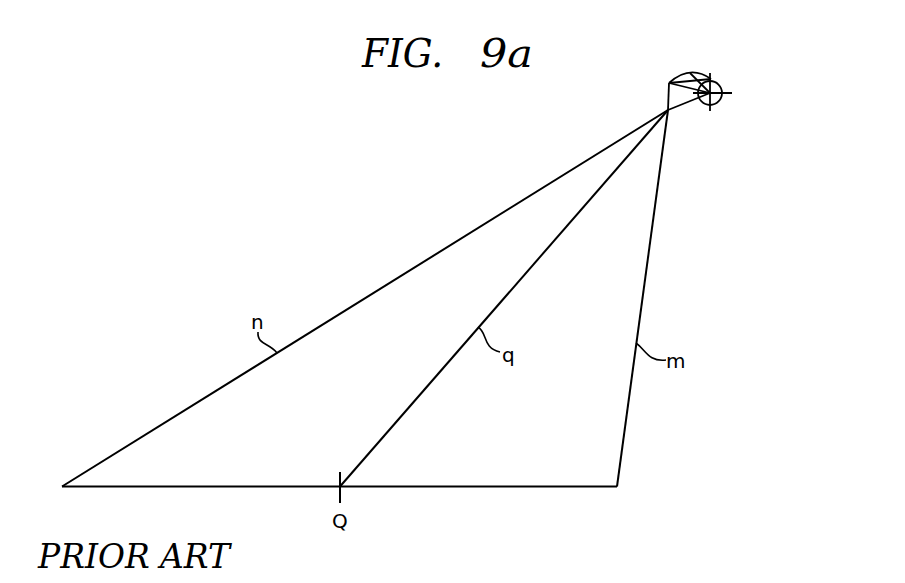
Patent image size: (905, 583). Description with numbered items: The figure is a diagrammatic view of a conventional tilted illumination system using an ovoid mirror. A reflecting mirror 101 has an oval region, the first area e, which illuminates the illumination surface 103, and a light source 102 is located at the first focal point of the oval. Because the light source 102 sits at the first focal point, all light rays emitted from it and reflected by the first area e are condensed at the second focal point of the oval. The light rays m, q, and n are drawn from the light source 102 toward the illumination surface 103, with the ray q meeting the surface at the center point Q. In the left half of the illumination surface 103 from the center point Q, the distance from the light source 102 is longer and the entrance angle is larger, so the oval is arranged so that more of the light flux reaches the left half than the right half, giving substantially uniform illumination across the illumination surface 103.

The reflecting mirror 101 is at (692, 64).
The light source 102 is at (721, 108).
The illumination surface 103 is at (490, 496).